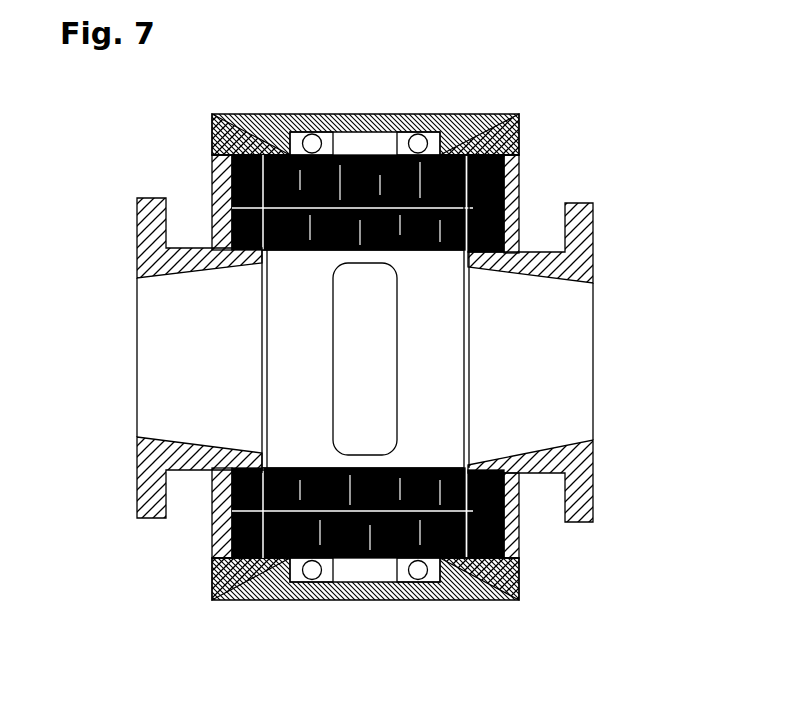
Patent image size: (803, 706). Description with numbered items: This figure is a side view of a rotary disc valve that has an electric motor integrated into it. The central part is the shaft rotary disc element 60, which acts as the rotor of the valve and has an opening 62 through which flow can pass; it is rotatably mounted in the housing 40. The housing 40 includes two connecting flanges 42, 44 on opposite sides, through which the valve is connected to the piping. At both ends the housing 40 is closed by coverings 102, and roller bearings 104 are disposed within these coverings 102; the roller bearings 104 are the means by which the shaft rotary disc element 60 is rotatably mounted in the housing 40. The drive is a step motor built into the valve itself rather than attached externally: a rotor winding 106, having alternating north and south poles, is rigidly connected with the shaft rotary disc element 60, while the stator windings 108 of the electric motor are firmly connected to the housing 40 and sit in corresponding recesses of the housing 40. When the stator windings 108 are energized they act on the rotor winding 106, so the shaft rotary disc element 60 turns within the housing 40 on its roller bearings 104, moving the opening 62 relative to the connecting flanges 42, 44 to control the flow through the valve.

The housing 40 is at (157, 262).
The connecting flange 42 is at (595, 463).
The connecting flange 44 is at (132, 463).
The shaft rotary disc element 60 is at (278, 306).
The opening 62 is at (375, 362).
The covering 102 is at (485, 127).
The roller bearing 104 is at (335, 131).
The rotor winding 106 is at (224, 113).
The stator windings 108 is at (515, 172).